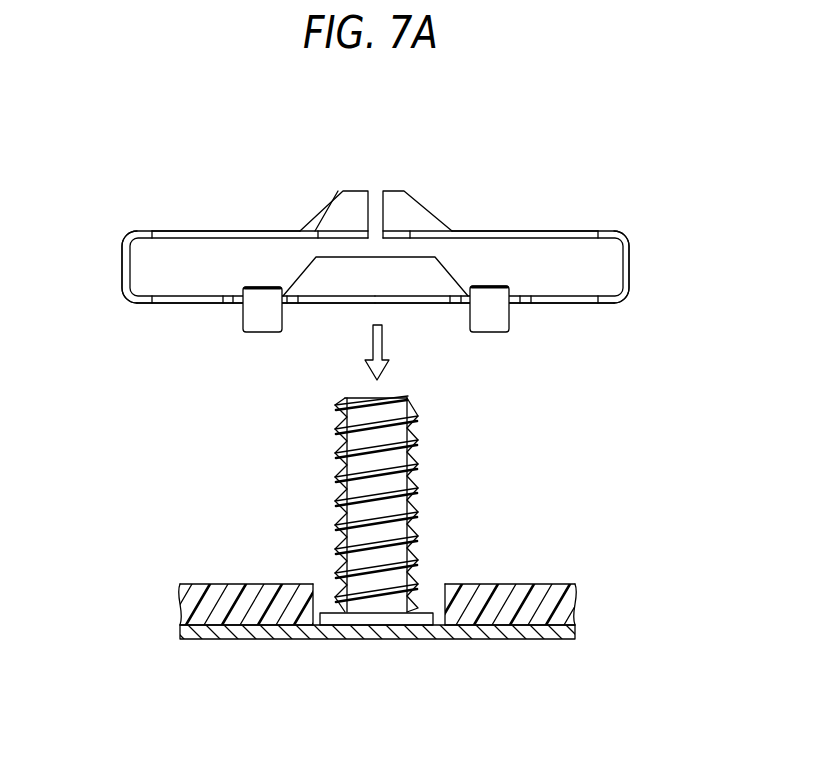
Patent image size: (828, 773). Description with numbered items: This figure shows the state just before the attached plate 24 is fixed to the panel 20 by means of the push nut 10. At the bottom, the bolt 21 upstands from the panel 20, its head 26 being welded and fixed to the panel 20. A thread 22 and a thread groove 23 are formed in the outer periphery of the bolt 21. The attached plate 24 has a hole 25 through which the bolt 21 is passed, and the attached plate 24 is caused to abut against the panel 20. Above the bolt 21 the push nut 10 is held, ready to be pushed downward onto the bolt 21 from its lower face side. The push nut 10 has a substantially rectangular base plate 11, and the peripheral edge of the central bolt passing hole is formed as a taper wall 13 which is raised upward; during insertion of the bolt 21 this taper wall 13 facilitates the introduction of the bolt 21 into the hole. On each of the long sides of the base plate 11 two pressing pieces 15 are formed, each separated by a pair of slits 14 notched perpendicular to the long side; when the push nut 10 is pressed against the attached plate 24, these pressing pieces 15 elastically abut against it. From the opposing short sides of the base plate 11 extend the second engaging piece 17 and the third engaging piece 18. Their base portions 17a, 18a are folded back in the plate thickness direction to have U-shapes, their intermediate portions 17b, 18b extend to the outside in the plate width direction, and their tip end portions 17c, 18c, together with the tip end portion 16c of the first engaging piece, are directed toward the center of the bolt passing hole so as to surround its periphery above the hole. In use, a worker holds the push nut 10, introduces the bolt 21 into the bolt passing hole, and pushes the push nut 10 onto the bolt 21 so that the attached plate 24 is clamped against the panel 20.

The push nut 10 is at (640, 140).
The base plate 11 is at (358, 304).
The taper wall 13 is at (407, 278).
The slits 14 is at (232, 303).
The pressing pieces 15 is at (258, 322).
The tip end portion of first engaging piece 16c is at (325, 212).
The second engaging piece 17 is at (198, 231).
The base portion of second engaging piece 17a is at (122, 273).
The intermediate portion of second engaging piece 17b is at (166, 231).
The tip end portion of second engaging piece 17c is at (345, 213).
The third engaging piece 18 is at (565, 231).
The base portion of third engaging piece 18a is at (630, 270).
The intermediate portion of third engaging piece 18b is at (578, 231).
The tip end portion of third engaging piece 18c is at (407, 210).
The panel 20 is at (472, 639).
The bolt 21 is at (326, 444).
The thread 22 is at (410, 445).
The thread groove 23 is at (410, 452).
The attached plate 24 is at (563, 603).
The hole 25 is at (443, 584).
The head 26 is at (370, 618).